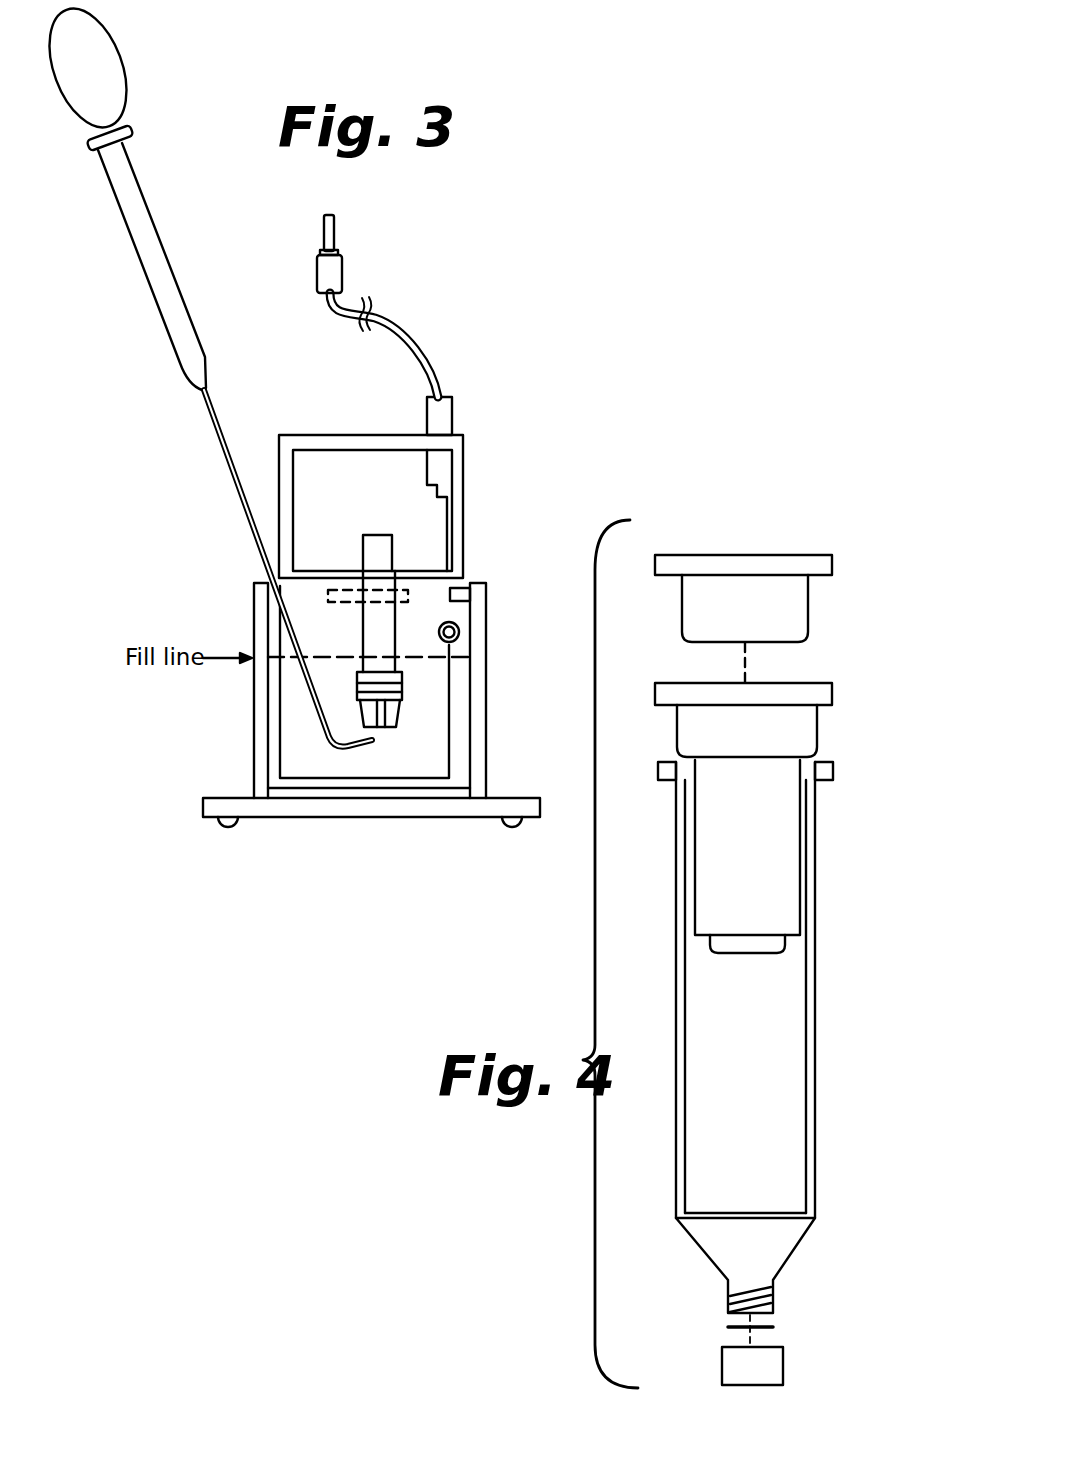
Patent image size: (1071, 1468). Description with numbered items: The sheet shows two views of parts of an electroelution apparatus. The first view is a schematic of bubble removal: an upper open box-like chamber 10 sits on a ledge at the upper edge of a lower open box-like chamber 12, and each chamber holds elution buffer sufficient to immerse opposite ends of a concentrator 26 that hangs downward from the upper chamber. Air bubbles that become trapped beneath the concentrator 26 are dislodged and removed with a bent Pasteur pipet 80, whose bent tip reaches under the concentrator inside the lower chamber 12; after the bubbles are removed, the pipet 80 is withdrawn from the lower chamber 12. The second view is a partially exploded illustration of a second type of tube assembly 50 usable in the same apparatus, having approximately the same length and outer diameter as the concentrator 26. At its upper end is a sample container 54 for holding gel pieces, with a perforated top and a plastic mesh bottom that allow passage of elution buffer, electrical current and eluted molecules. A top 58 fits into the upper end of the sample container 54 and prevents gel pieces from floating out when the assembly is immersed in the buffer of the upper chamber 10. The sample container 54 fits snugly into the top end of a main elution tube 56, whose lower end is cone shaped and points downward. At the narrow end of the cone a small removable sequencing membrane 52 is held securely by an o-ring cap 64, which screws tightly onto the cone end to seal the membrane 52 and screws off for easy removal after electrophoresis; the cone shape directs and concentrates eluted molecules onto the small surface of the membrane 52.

In FIG. 3, the upper open box-like chamber 10 is at (279, 487).
In FIG. 3, the lower open box-like chamber 12 is at (254, 733).
In FIG. 3, the concentrator 26 is at (361, 632).
In FIG. 3, the bent Pasteur pipet 80 is at (192, 421).
In FIG. 4, the tube assembly 50 is at (763, 927).
In FIG. 4, the sequencing membrane 52 is at (780, 1327).
In FIG. 4, the sample container 54 is at (785, 824).
In FIG. 4, the main elution tube 56 is at (787, 981).
In FIG. 4, the top 58 is at (812, 616).
In FIG. 4, the o-ring cap 64 is at (796, 1368).